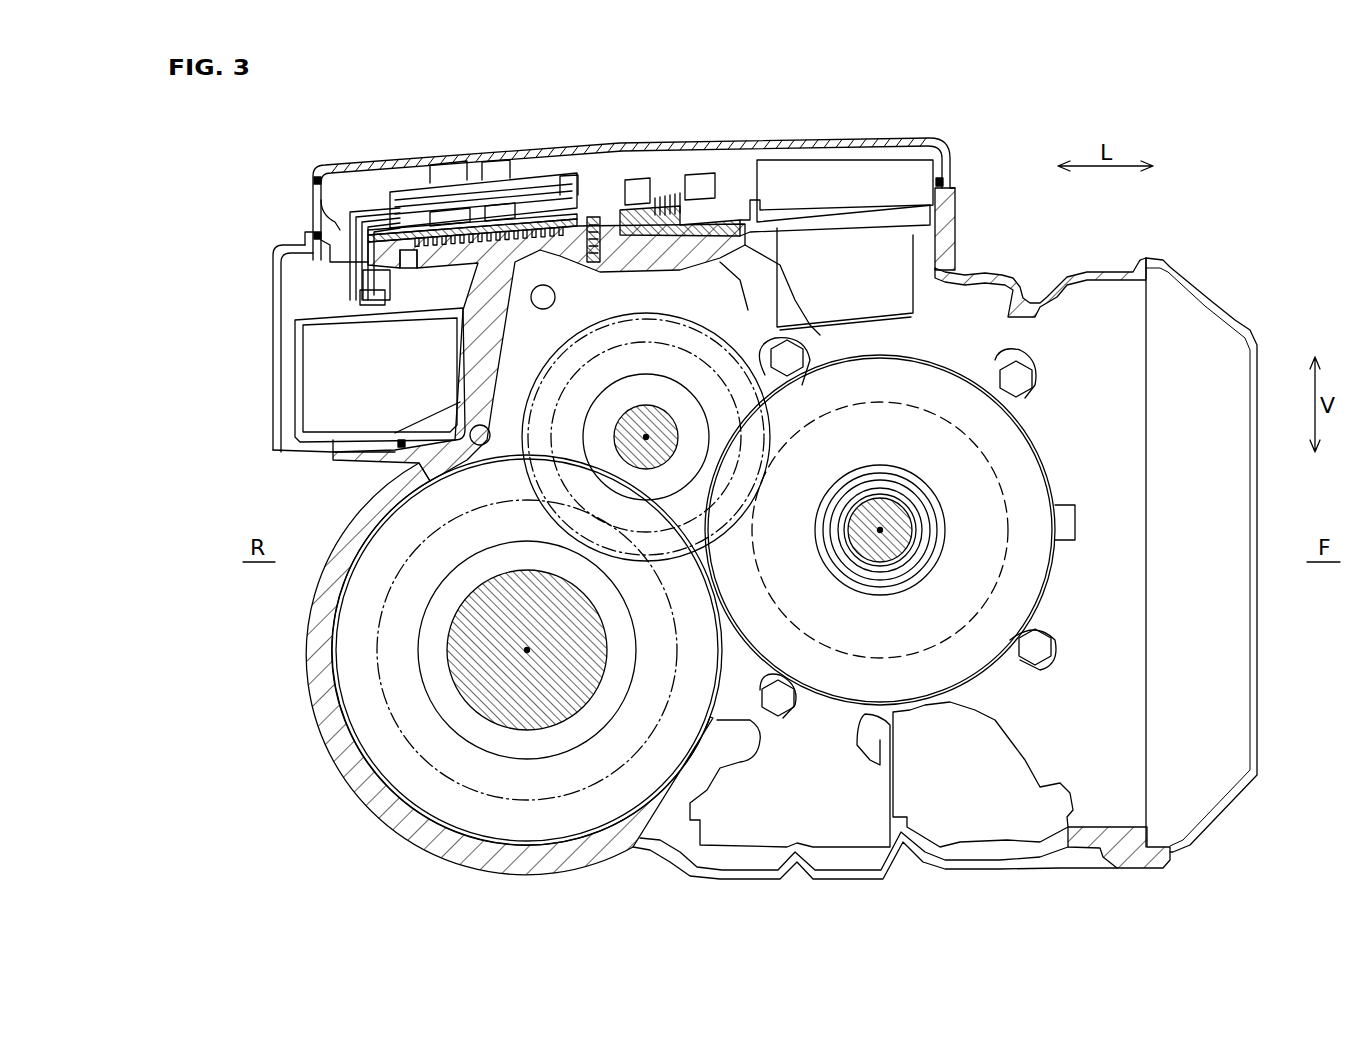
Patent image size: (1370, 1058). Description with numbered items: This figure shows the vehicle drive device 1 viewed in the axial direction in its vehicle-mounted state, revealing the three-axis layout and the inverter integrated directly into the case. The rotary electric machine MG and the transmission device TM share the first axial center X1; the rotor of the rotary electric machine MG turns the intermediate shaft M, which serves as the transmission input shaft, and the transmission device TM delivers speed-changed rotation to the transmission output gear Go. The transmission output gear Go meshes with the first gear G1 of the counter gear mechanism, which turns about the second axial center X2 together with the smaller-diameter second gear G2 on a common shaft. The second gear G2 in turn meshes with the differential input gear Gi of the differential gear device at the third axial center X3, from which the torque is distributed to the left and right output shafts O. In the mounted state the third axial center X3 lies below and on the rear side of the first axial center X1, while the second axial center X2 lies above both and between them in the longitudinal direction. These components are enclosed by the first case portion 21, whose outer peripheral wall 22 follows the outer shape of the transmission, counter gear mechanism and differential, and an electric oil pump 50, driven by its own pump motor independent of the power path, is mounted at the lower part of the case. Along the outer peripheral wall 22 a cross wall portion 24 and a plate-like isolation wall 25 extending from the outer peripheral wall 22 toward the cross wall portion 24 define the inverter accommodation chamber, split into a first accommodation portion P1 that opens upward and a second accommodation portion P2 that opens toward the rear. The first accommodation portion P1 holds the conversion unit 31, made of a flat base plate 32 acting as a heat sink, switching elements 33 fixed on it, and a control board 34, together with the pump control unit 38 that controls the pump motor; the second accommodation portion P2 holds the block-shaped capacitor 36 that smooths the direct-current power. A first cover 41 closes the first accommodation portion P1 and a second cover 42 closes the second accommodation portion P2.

The vehicle drive device 1 is at (1260, 215).
The first case portion 21 is at (1088, 268).
The outer peripheral wall 22 is at (1000, 270).
The cross wall portion 24 is at (326, 222).
The isolation wall 25 is at (465, 262).
The conversion unit 31 is at (418, 180).
The base plate 32 is at (410, 268).
The switching elements 33 is at (522, 205).
The control board 34 is at (424, 180).
The capacitor 36 is at (296, 378).
The pump control unit 38 is at (672, 168).
The first cover 41 is at (925, 140).
The second cover 42 is at (282, 350).
The electric oil pump 50 is at (1052, 760).
The first accommodation portion P1 is at (356, 177).
The second accommodation portion P2 is at (290, 265).
The first gear G1 is at (745, 328).
The second gear G2 is at (647, 342).
The first axial center X1 is at (880, 530).
The second axial center X2 is at (647, 437).
The third axial center X3 is at (527, 650).
The rotary electric machine MG is at (900, 360).
The transmission device TM is at (1022, 450).
The transmission output gear Go is at (1008, 510).
The differential input gear Gi is at (390, 717).
The intermediate shaft M is at (890, 560).
The output shafts O is at (485, 713).